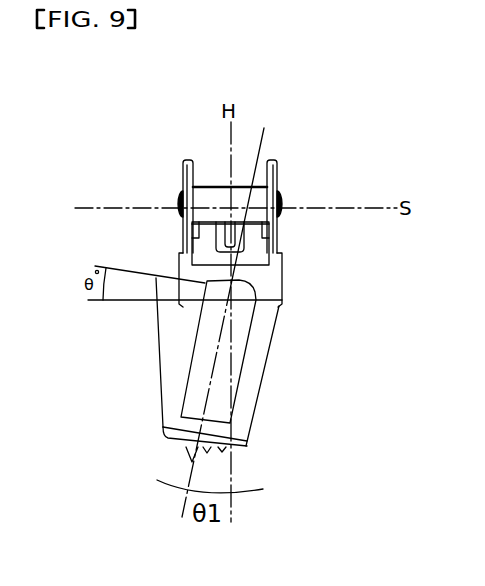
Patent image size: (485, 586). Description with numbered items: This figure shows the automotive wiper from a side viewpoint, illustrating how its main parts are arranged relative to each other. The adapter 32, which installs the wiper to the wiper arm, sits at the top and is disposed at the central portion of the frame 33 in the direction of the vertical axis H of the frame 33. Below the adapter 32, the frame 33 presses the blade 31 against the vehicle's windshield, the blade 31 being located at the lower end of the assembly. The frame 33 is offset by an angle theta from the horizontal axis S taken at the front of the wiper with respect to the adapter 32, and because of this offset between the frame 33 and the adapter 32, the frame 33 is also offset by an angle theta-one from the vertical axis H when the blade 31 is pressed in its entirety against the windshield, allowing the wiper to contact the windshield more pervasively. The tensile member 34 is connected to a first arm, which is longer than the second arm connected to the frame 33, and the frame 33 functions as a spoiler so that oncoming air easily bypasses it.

The blade 31 is at (237, 332).
The adapter 32 is at (277, 177).
The frame 33 is at (146, 352).
The tensile member 34 is at (250, 380).